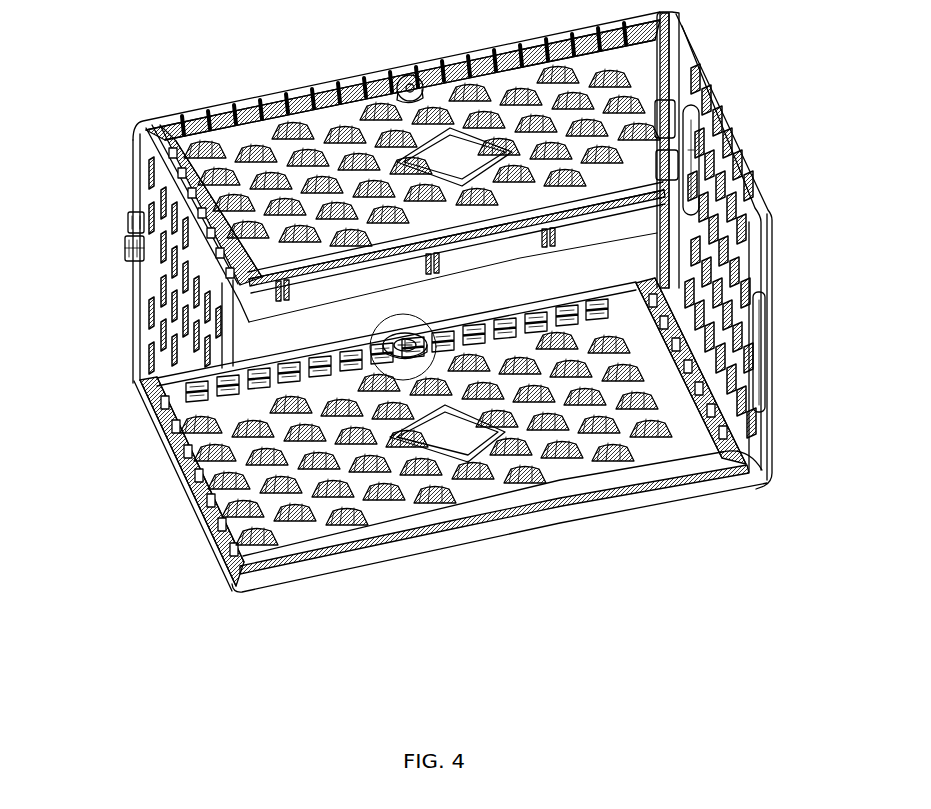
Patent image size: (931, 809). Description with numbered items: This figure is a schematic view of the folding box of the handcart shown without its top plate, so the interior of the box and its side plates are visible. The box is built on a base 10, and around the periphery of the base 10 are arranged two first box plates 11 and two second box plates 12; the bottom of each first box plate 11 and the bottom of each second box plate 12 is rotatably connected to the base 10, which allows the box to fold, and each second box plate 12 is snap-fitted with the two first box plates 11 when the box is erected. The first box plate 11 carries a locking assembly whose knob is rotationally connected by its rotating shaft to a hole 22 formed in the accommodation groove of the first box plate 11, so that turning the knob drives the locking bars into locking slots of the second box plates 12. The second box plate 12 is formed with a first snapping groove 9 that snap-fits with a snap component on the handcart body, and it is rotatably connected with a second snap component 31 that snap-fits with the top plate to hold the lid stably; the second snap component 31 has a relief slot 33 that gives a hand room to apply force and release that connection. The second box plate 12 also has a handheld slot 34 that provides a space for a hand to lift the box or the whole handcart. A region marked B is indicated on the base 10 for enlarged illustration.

The first snapping groove 9 is at (768, 318).
The base 10 is at (300, 570).
The first box plate 11 is at (188, 108).
The second box plate 12 is at (695, 97).
The hole 22 is at (404, 78).
The second snap component 31 is at (128, 222).
The relief slot 33 is at (127, 247).
The handheld slot 34 is at (708, 148).
The enlarged portion B is at (408, 380).